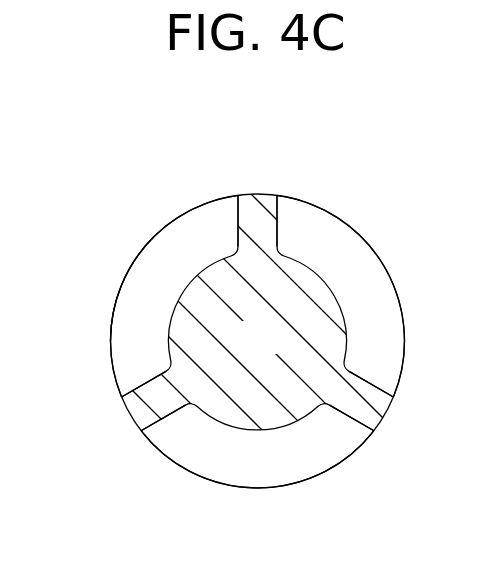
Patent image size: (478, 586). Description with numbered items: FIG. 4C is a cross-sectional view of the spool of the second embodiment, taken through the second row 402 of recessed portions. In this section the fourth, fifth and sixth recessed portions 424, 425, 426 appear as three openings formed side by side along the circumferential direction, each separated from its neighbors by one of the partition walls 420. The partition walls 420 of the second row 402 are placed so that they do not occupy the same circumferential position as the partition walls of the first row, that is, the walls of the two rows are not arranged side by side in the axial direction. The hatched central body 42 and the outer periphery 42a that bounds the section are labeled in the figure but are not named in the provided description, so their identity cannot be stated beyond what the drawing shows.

The second row 402 is at (166, 196).
The shaft 42 is at (276, 351).
The outer peripheral surface 42a is at (130, 265).
The partition walls 420 is at (258, 200).
The fourth recessed portion 424 is at (114, 355).
The fifth recessed portion 425 is at (321, 226).
The sixth recessed portion 426 is at (227, 474).